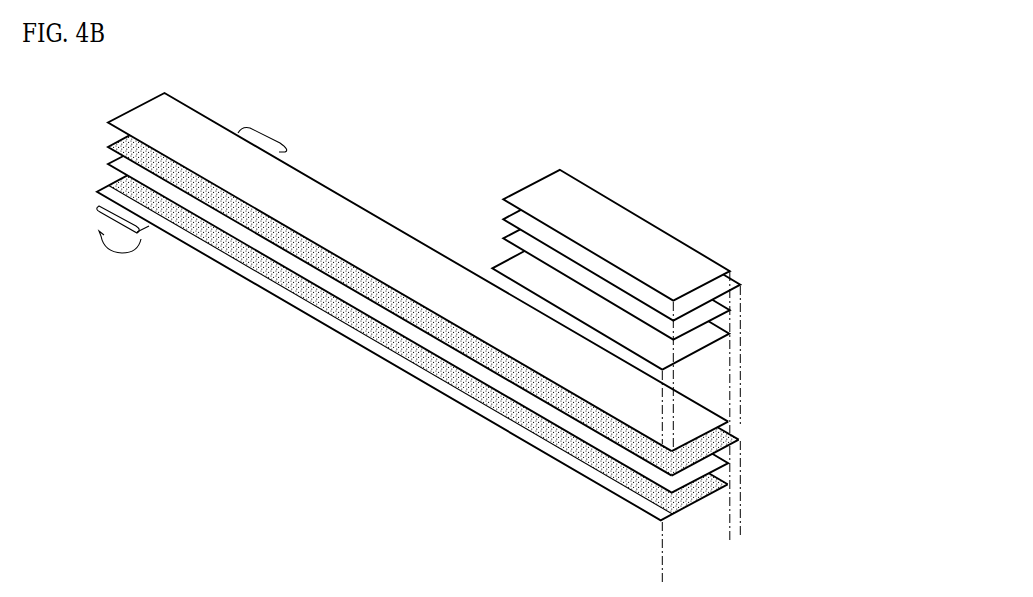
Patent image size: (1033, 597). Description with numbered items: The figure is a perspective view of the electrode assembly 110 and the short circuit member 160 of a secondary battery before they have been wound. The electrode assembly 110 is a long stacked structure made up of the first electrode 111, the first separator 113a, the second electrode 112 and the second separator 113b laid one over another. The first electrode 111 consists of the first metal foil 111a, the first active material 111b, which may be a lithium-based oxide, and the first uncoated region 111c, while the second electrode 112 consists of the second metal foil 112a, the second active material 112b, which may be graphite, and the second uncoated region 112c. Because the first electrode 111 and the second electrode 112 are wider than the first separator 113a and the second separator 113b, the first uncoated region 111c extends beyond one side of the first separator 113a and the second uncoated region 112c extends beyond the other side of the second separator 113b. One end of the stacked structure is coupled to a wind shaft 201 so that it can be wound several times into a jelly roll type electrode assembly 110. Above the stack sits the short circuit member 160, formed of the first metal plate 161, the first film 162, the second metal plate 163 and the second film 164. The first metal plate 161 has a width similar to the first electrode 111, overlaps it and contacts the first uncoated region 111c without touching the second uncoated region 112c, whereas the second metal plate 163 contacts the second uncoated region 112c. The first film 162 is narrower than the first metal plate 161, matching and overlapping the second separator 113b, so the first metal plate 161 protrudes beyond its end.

The electrode assembly 110 is at (341, 163).
The first electrode 111 is at (300, 390).
The first metal foil 111a is at (427, 392).
The first active material 111b is at (337, 320).
The first uncoated region 111c is at (387, 357).
The second electrode 112 is at (816, 381).
The second metal foil 112a is at (742, 437).
The second active material 112b is at (710, 428).
The second uncoated region 112c is at (728, 430).
The first separator 113a is at (107, 162).
The second separator 113b is at (143, 112).
The short circuit member 160 is at (612, 174).
The first metal plate 161 is at (503, 265).
The first film 162 is at (506, 238).
The second metal plate 163 is at (506, 219).
The second film 164 is at (541, 186).
The wind shaft 201 is at (263, 128).